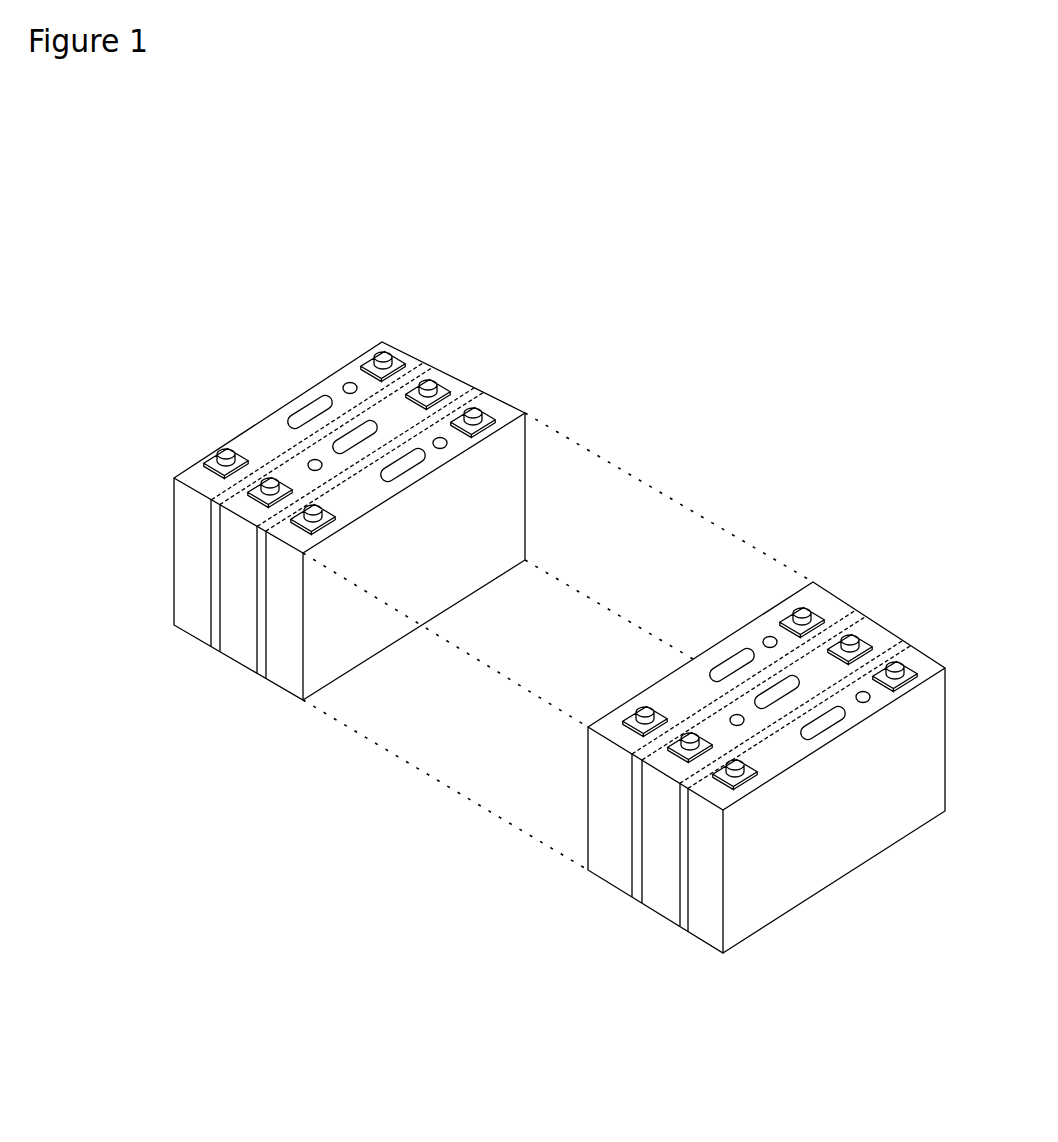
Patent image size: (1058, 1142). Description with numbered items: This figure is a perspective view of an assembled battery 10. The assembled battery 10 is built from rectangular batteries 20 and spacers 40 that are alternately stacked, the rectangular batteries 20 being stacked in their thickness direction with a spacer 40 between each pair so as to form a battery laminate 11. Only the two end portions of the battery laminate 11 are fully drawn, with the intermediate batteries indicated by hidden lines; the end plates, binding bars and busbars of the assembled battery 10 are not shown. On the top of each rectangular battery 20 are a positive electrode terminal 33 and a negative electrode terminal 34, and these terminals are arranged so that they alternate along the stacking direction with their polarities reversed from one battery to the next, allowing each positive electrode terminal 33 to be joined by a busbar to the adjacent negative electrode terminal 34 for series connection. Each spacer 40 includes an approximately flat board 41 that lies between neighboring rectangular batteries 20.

The assembled battery 10 is at (647, 375).
The battery laminate 11 is at (712, 507).
The rectangular battery 20 is at (234, 667).
The positive electrode terminal 33 is at (383, 352).
The negative electrode terminal 34 is at (428, 386).
The spacer 40 is at (209, 653).
The board 41 is at (410, 435).